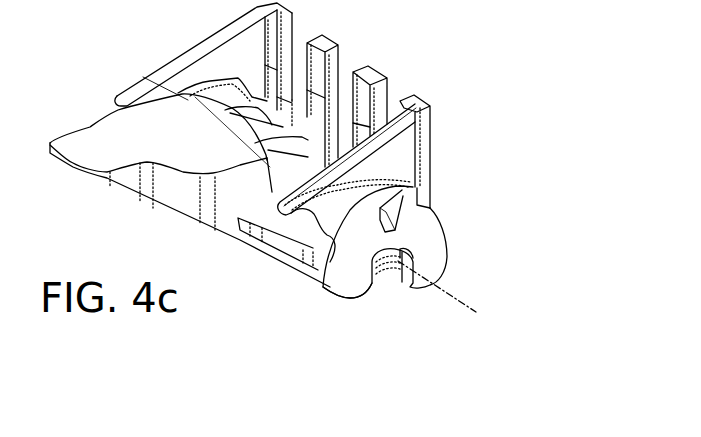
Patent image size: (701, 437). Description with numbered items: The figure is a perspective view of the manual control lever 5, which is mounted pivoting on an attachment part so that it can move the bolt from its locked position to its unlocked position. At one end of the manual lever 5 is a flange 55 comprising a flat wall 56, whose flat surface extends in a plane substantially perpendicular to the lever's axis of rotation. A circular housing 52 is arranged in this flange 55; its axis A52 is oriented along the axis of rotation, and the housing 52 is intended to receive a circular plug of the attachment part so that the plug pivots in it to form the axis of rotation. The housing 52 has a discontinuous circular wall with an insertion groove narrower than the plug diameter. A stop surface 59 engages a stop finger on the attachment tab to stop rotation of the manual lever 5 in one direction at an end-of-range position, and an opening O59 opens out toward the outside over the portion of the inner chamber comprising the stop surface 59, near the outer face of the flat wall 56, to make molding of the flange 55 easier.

The manual control lever 5 is at (79, 99).
The circular housing 52 is at (393, 306).
The flange 55 is at (353, 303).
The flat wall 56 is at (408, 273).
The stop surface 59 is at (407, 197).
The opening of notch O59 is at (367, 239).
The axis of the circular housing A52 is at (464, 287).